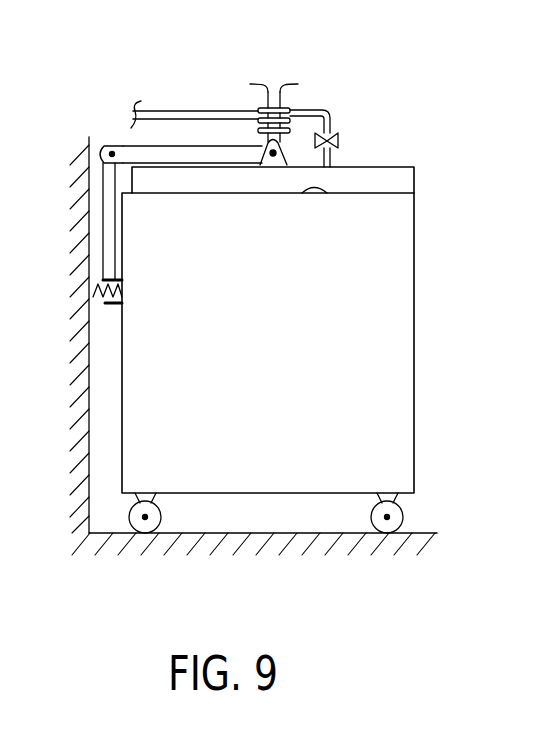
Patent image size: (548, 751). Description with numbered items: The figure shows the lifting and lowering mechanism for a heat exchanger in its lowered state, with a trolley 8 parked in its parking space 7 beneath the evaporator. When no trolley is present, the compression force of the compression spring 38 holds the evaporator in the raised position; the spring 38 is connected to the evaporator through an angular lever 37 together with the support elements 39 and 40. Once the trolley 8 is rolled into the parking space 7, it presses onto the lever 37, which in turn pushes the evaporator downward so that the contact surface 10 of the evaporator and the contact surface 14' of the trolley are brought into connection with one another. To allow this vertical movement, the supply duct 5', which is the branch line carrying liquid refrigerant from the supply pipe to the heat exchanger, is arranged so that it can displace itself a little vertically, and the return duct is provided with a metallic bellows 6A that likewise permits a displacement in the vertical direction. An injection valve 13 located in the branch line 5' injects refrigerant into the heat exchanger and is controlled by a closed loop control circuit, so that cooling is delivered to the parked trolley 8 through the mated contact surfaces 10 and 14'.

The supply duct 5' is at (194, 68).
The metallic bellows 6A is at (283, 103).
The parking space 7 is at (172, 537).
The trolley 8 is at (413, 355).
The contact surface 10 is at (298, 193).
The injection valve 13 is at (333, 139).
The contact surface 14' is at (273, 225).
The angular lever 37 is at (110, 238).
The compression spring 38 is at (100, 287).
The support element 39 is at (287, 163).
The support element 40 is at (106, 143).